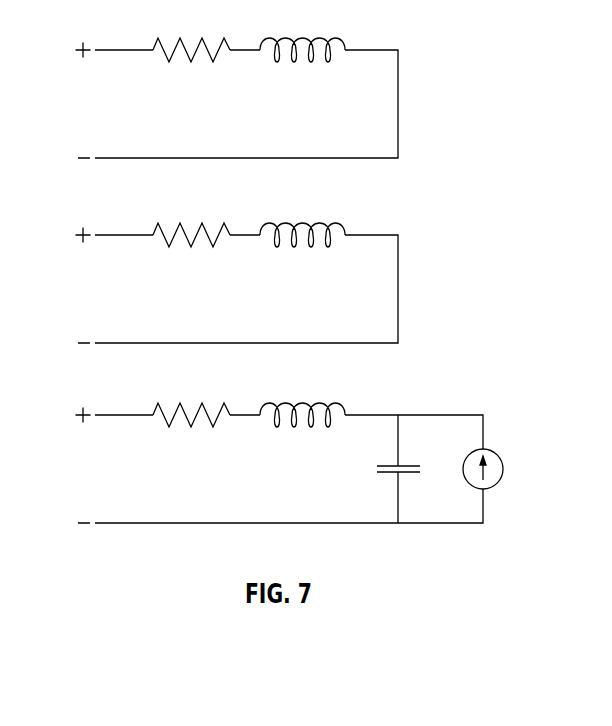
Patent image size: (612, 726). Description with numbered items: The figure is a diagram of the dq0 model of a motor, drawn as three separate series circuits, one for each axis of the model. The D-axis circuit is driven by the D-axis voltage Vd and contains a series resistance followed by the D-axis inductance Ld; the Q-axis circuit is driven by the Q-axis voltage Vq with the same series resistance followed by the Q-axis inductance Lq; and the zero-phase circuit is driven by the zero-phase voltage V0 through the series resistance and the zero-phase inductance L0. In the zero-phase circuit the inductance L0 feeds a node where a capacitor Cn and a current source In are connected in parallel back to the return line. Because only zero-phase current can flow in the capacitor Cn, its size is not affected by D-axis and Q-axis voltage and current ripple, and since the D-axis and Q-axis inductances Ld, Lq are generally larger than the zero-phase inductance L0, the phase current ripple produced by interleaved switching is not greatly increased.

The d-axis voltage Vd is at (64, 101).
The q-axis voltage Vq is at (64, 286).
The zero-sequence voltage V0 is at (64, 466).
The d-axis inductance Ld is at (302, 32).
The q-axis inductance Lq is at (302, 217).
The zero-sequence inductance L0 is at (302, 397).
The capacitor Cn is at (382, 469).
The neutral current source In is at (495, 469).